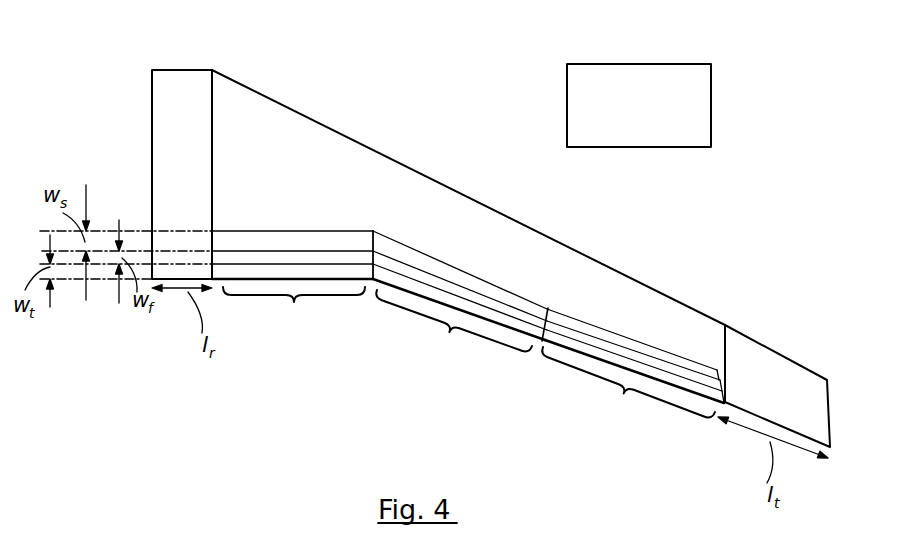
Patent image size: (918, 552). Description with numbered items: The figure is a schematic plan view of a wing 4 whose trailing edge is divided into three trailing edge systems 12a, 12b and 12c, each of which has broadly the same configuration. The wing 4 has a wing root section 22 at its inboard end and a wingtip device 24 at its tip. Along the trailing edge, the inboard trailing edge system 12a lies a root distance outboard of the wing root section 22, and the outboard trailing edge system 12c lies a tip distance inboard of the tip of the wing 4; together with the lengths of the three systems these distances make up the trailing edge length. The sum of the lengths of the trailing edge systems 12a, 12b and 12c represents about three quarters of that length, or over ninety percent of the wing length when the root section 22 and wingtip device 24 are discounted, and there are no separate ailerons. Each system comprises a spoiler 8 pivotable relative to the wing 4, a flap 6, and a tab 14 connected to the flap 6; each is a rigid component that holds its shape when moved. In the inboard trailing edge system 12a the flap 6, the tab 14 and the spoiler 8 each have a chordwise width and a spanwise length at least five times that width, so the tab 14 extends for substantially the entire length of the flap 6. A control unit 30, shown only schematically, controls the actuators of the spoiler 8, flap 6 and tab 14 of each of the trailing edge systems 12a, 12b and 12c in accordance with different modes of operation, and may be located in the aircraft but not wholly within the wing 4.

The wing 4 is at (477, 212).
The wing root section 22 is at (173, 87).
The wingtip device 24 is at (760, 352).
The spoiler 8 is at (235, 238).
The flap 6 is at (272, 253).
The tab 14 is at (318, 272).
The inboard trailing edge system 12a is at (294, 317).
The trailing edge system 12b is at (454, 335).
The outboard trailing edge system 12c is at (628, 392).
The control unit 30 is at (653, 110).